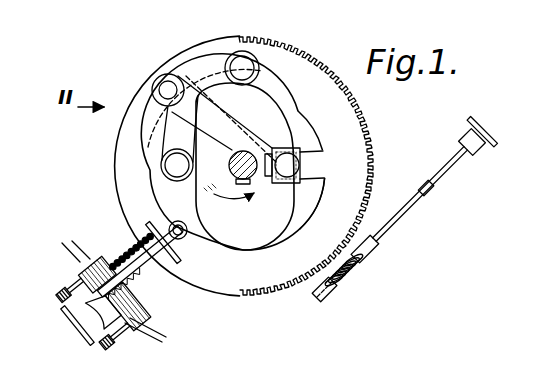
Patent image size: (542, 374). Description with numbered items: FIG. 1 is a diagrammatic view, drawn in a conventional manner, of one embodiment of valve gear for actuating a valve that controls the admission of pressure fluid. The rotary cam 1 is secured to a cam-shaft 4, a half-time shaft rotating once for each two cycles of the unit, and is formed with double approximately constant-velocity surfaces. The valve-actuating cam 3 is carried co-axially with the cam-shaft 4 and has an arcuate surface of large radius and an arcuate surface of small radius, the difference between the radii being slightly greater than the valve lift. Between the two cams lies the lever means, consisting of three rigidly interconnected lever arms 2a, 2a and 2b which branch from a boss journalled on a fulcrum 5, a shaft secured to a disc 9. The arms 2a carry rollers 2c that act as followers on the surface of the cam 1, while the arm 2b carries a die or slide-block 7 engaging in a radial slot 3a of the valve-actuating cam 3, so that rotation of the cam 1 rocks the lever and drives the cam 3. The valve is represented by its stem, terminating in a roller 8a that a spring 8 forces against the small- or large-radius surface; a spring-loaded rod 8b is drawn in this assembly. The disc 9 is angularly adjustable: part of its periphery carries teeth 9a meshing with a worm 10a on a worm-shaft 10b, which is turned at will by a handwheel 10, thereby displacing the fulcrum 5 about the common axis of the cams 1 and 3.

The rotary cam 1 is at (245, 166).
The lever arms 2a is at (112, 160).
The lever arm 2b is at (212, 115).
The rollers 2c is at (260, 63).
The valve-actuating cam 3 is at (334, 129).
The radial slot 3a is at (317, 157).
The cam-shaft 4 is at (229, 164).
The fulcrum 5 is at (156, 83).
The slide-block 7 is at (316, 190).
The spring 8 is at (90, 316).
The roller 8a is at (185, 239).
The spring rod 8b is at (150, 282).
The disc 9 is at (244, 166).
The teeth 9a is at (321, 288).
The handwheel 10 is at (489, 129).
The worm 10a is at (363, 259).
The worm-shaft 10b is at (432, 180).